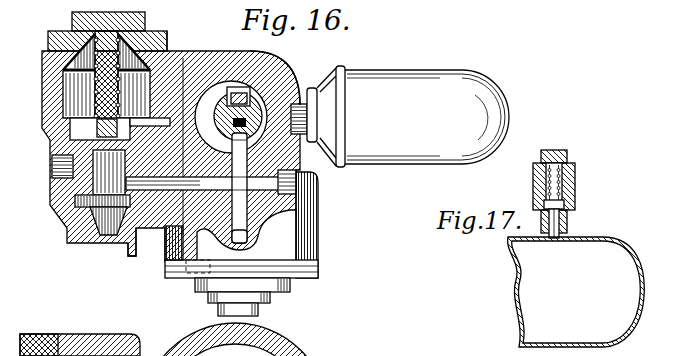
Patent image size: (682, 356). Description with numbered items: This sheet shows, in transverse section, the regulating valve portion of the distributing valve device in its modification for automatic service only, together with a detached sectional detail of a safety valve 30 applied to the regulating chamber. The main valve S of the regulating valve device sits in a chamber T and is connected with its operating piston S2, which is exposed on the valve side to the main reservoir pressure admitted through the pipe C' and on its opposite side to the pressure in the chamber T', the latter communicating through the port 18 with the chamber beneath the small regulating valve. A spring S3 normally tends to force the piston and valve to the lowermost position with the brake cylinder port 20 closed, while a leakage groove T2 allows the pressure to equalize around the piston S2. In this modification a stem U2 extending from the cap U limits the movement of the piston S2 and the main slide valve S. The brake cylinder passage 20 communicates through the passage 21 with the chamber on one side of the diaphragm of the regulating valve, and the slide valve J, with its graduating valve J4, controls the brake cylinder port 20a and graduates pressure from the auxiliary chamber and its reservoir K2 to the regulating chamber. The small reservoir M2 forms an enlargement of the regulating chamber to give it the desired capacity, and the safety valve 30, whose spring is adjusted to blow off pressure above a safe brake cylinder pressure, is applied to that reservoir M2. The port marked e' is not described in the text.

In FIG. 16, the cap U is at (85, 18).
In FIG. 16, the stem U2 is at (68, 32).
In FIG. 16, the spring S3 is at (60, 58).
In FIG. 16, the chamber T' is at (78, 59).
In FIG. 16, the leakage groove T2 is at (60, 97).
In FIG. 16, the piston S2 is at (58, 115).
In FIG. 16, the pipe C' is at (41, 165).
In FIG. 16, the main valve S is at (78, 200).
In FIG. 16, the chamber T is at (80, 221).
In FIG. 16, the port 18 is at (168, 42).
In FIG. 16, the graduating valve J4 is at (272, 66).
In FIG. 16, the slide valve J is at (293, 82).
In FIG. 16, the reservoir K2 is at (297, 134).
In FIG. 16, the brake cylinder port 20a is at (252, 166).
In FIG. 16, the threaded port e' is at (308, 186).
In FIG. 16, the passage 21 is at (237, 243).
In FIG. 16, the brake cylinder port 20 is at (160, 231).
In FIG. 17, the safety valve 30 is at (576, 208).
In FIG. 17, the reservoir M2 is at (530, 281).